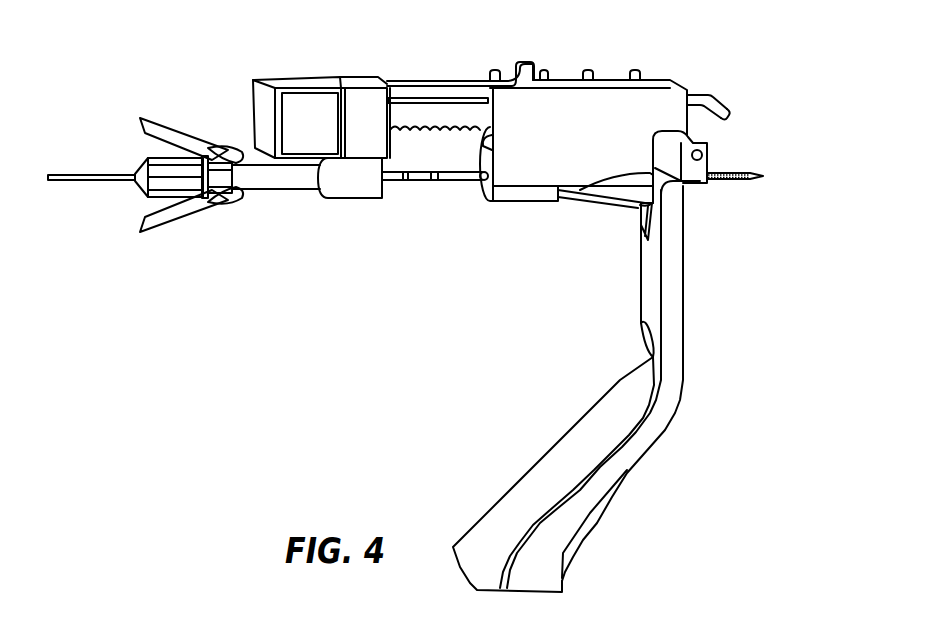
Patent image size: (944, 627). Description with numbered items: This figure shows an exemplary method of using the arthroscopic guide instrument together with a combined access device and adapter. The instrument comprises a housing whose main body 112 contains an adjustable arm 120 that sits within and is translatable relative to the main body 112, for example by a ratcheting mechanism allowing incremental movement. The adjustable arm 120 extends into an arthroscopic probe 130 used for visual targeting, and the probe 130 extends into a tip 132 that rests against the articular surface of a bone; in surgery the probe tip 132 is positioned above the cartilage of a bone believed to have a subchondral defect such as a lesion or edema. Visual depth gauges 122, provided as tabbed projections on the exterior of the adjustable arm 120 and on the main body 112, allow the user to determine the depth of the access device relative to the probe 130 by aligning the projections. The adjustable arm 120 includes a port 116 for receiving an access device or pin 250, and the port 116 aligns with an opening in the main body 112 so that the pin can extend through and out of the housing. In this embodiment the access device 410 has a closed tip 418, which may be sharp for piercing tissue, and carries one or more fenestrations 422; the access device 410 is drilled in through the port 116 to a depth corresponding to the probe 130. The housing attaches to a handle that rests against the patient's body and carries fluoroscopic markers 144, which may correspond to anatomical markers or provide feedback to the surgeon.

The main body 112 is at (600, 148).
The port 116 is at (283, 180).
The adjustable arm 120 is at (298, 98).
The visual depth gauges 122 is at (528, 60).
The arthroscopic probe 130 is at (708, 95).
The tip 132 is at (733, 113).
The fluoroscopic markers 144 is at (705, 153).
The access device or pin 250 is at (187, 217).
The access device 410 is at (452, 177).
The tip 418 is at (767, 175).
The fenestrations 422 is at (718, 182).